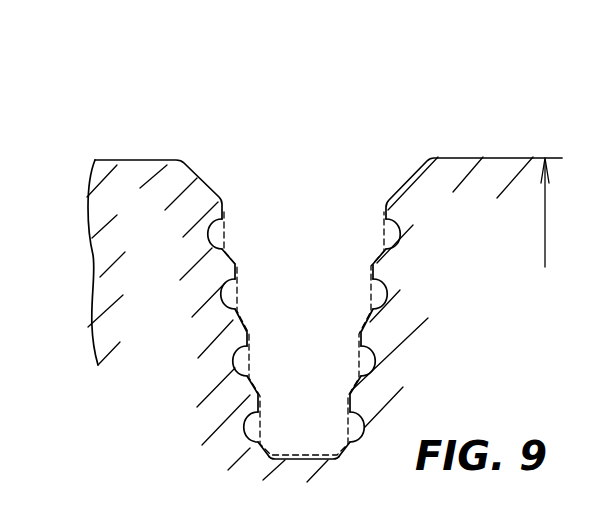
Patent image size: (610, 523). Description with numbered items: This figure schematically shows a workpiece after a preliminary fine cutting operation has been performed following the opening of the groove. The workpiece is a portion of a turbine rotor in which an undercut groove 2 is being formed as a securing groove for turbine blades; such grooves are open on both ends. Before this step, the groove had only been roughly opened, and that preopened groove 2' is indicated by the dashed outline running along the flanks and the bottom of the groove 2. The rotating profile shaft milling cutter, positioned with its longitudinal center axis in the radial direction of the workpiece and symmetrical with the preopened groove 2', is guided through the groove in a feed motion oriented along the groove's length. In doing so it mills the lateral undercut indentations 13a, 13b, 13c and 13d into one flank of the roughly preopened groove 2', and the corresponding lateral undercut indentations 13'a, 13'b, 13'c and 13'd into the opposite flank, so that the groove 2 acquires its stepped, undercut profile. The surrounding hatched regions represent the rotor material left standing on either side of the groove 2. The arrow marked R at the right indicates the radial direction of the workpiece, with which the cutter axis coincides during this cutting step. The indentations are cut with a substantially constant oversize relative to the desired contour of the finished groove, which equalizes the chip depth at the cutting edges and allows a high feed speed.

The undercut groove 2 is at (324, 287).
The preopened groove 2' is at (304, 309).
The lateral undercut indentation 13a is at (406, 228).
The lateral undercut indentation 13b is at (394, 292).
The lateral undercut indentation 13c is at (381, 357).
The lateral undercut indentation 13d is at (371, 427).
The lateral undercut indentation 13'a is at (179, 250).
The lateral undercut indentation 13'b is at (186, 314).
The lateral undercut indentation 13'c is at (190, 371).
The lateral undercut indentation 13'd is at (205, 438).
The reference dimension R is at (551, 215).